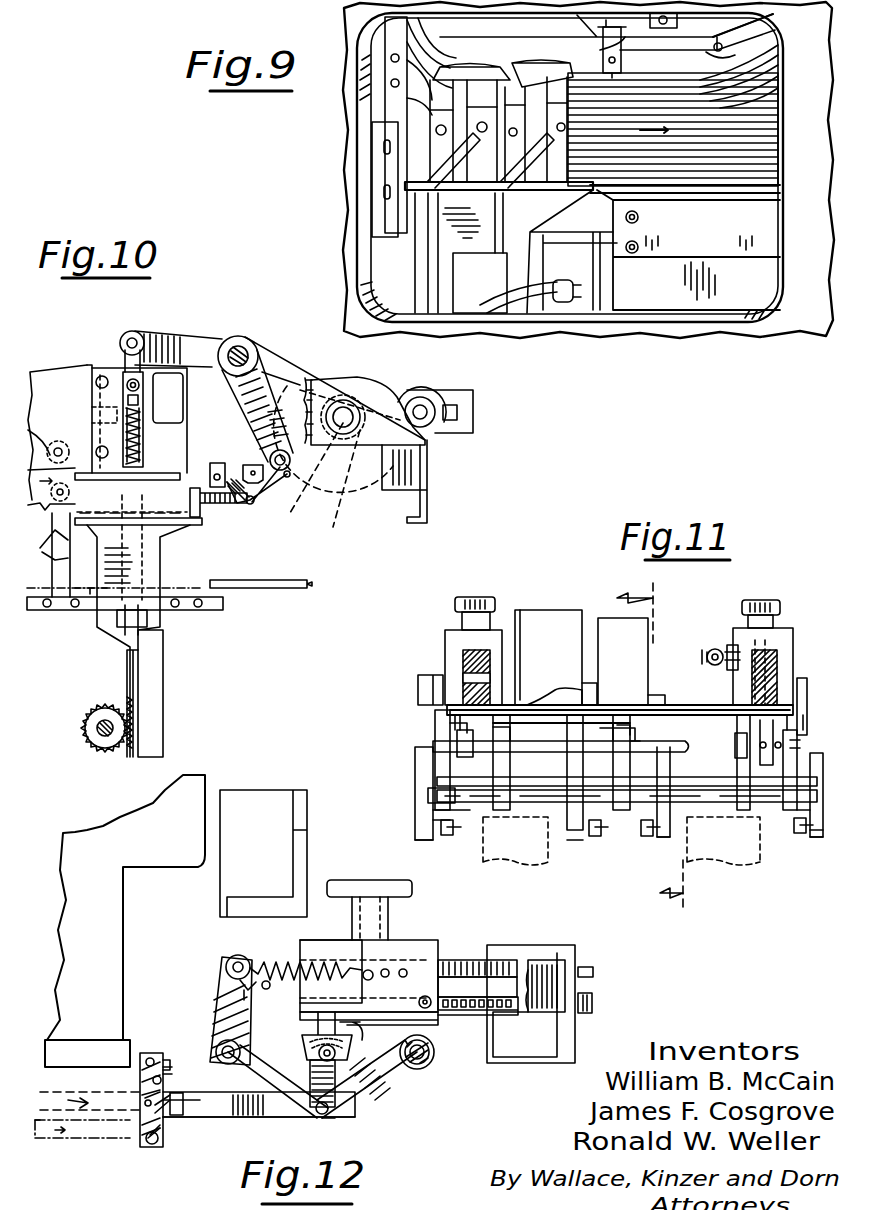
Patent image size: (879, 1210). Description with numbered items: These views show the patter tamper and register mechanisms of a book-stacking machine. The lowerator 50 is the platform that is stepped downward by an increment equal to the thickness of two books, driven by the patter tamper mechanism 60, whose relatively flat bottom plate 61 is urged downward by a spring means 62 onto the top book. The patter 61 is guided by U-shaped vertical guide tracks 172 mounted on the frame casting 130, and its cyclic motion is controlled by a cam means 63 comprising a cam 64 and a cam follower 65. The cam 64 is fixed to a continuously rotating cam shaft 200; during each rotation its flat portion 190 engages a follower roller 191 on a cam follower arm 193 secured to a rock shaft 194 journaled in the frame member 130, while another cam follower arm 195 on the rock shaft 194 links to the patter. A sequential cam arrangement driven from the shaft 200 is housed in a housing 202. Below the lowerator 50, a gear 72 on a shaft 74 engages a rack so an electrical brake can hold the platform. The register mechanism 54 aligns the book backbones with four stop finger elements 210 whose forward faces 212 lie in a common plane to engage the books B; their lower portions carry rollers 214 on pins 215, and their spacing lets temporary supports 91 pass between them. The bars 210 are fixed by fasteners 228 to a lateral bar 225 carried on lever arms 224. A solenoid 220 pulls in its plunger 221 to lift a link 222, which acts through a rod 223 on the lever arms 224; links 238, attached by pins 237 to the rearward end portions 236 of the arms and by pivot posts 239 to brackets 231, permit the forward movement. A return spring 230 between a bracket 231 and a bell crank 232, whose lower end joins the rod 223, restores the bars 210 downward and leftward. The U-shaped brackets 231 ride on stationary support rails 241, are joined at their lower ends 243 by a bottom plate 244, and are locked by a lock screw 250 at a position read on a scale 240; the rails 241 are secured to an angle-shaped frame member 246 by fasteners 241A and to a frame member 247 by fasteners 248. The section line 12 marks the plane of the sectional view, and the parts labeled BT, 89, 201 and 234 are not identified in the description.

In FIG. 9, the battery BT is at (782, 38).
In FIG. 9, the housing block 89 is at (678, 192).
In FIG. 10, the patter tamper mechanism 60 is at (94, 356).
In FIG. 10, the bottom plate 61 is at (158, 468).
In FIG. 12, the bottom plate 61 is at (85, 1040).
In FIG. 10, the spring means 62 is at (111, 433).
In FIG. 10, the cam means 63 is at (369, 393).
In FIG. 10, the cam 64 is at (342, 376).
In FIG. 10, the cam follower 65 is at (262, 378).
In FIG. 10, the cam follower arm 195 is at (150, 338).
In FIG. 10, the frame casting 130 is at (205, 342).
In FIG. 10, the rock shaft 194 is at (238, 345).
In FIG. 10, the cam follower arm 193 is at (283, 403).
In FIG. 10, the flat portion of the cam 190 is at (328, 372).
In FIG. 10, the cam shaft 200 is at (352, 426).
In FIG. 10, the roller 201 is at (424, 403).
In FIG. 10, the housing 202 is at (473, 415).
In FIG. 10, the follower roller 191 is at (333, 456).
In FIG. 10, the vertical guide tracks 172 is at (77, 500).
In FIG. 10, the register mechanism 54 is at (204, 513).
In FIG. 12, the register mechanism 54 is at (175, 1150).
In FIG. 10, the lowerator 50 is at (157, 535).
In FIG. 12, the lowerator 50 is at (72, 1148).
In FIG. 10, the gear 72 is at (105, 708).
In FIG. 10, the shaft 74 is at (88, 718).
In FIG. 11, the lower ends of the brackets 243 is at (815, 710).
In FIG. 11, the bracket 231 is at (788, 628).
In FIG. 12, the bracket 231 is at (418, 945).
In FIG. 11, the lock screw 250 is at (770, 600).
In FIG. 11, the support rails 241 is at (770, 667).
In FIG. 12, the support rails 241 is at (540, 962).
In FIG. 11, the scale 240 is at (448, 664).
In FIG. 12, the scale 240 is at (500, 1010).
In FIG. 11, the links 238 is at (805, 690).
In FIG. 12, the links 238 is at (430, 1050).
In FIG. 11, the solenoid 220 is at (610, 643).
In FIG. 12, the solenoid 220 is at (318, 940).
In FIG. 11, the bottom plate 244 is at (695, 705).
In FIG. 11, the return spring 230 is at (712, 650).
In FIG. 12, the return spring 230 is at (236, 955).
In FIG. 11, the bell crank 232 is at (730, 645).
In FIG. 12, the bell crank 232 is at (225, 1003).
In FIG. 11, the section line 12 is at (666, 746).
In FIG. 11, the plunger 221 is at (645, 727).
In FIG. 12, the plunger 221 is at (345, 1030).
In FIG. 11, the link 222 is at (640, 768).
In FIG. 12, the link 222 is at (340, 1090).
In FIG. 11, the rod 223 is at (445, 795).
In FIG. 12, the rod 223 is at (328, 1118).
In FIG. 11, the rearward end portions 236 is at (800, 768).
In FIG. 12, the rearward end portions 236 is at (390, 1075).
In FIG. 11, the pins 237 is at (815, 740).
In FIG. 12, the pins 237 is at (428, 1065).
In FIG. 11, the temporary supports 91 is at (525, 848).
In FIG. 11, the pins 215 is at (797, 835).
In FIG. 12, the pins 215 is at (165, 1115).
In FIG. 11, the rollers 214 is at (800, 835).
In FIG. 12, the rollers 214 is at (155, 1148).
In FIG. 11, the stop finger elements 210 is at (815, 838).
In FIG. 12, the stop finger elements 210 is at (152, 1055).
In FIG. 12, the frame member 247 is at (228, 883).
In FIG. 12, the pivot posts 239 is at (420, 996).
In FIG. 12, the angle-shaped frame member 246 is at (565, 1060).
In FIG. 12, the fasteners 241A is at (597, 985).
In FIG. 12, the fasteners 248 is at (240, 988).
In FIG. 12, the block 234 is at (300, 1050).
In FIG. 12, the forward faces 212 is at (150, 1075).
In FIG. 12, the books B is at (89, 1114).
In FIG. 12, the fasteners 228 is at (183, 1103).
In FIG. 12, the lever arms 224 is at (258, 1117).
In FIG. 12, the lateral bar 225 is at (148, 1110).